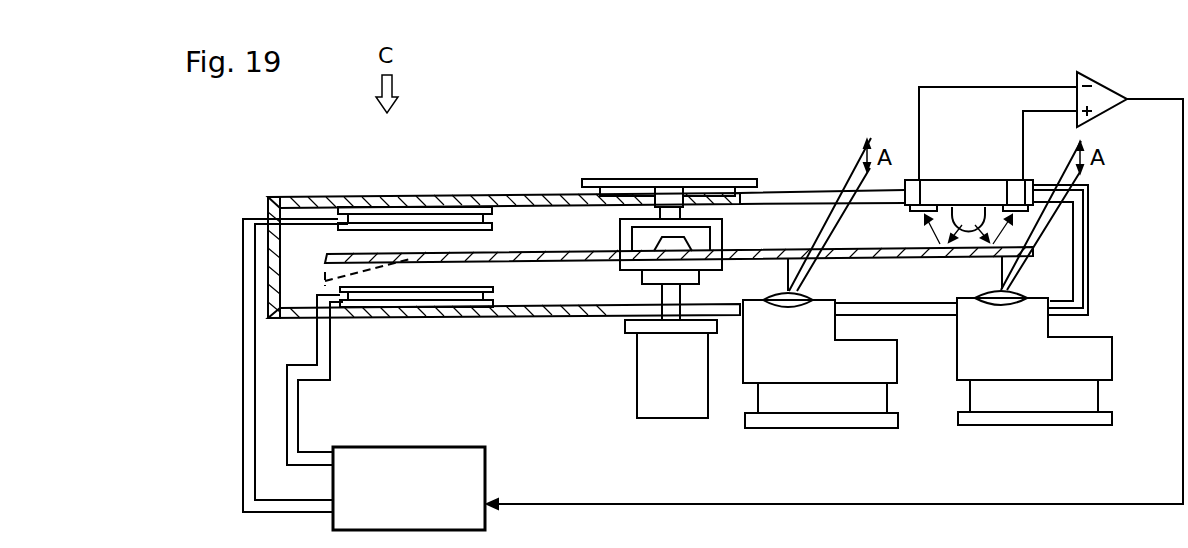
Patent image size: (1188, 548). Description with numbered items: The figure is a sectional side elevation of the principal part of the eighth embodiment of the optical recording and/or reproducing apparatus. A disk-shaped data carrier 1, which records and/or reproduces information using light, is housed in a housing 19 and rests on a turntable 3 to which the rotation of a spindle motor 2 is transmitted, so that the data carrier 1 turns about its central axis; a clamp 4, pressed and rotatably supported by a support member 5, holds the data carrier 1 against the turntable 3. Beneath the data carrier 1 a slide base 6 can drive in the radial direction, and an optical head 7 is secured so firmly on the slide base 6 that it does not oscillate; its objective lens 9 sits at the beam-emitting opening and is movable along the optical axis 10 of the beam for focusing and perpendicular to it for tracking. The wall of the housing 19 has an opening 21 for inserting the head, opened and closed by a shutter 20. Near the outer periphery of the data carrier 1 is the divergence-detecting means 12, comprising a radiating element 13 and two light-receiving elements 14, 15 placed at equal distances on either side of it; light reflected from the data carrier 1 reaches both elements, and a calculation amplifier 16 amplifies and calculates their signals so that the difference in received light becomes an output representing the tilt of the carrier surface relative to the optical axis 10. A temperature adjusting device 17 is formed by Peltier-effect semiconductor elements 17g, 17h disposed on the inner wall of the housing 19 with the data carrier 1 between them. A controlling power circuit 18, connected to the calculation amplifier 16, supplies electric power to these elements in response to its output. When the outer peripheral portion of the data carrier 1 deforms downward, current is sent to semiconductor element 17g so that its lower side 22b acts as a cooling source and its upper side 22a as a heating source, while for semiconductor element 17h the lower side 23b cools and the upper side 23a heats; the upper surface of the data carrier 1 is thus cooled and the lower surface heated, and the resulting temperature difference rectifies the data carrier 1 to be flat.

The data carrier 1 is at (537, 263).
The spindle motor 2 is at (657, 418).
The turntable 3 is at (608, 284).
The clamp 4 is at (722, 225).
The support member 5 is at (705, 180).
The slide base 6 is at (812, 428).
The optical head 7 is at (898, 370).
The objective lens 9 is at (812, 292).
The optical axis 10 is at (786, 278).
The divergence-detecting means 12 is at (938, 180).
The radiating element 13 is at (968, 207).
The light-receiving element 14 is at (913, 180).
The light-receiving element 15 is at (1008, 178).
The calculation amplifier 16 is at (1105, 72).
The temperature adjusting device 17 is at (315, 257).
The semiconductor element 17g is at (365, 218).
The semiconductor element 17h is at (392, 318).
The controlling power circuit 18 is at (487, 468).
The housing 19 is at (541, 194).
The shutter 20 is at (1090, 215).
The opening 21 is at (1065, 300).
The upper side 22a is at (410, 218).
The lower side 22b is at (500, 218).
The upper side 23a is at (500, 318).
The lower side 23b is at (450, 308).